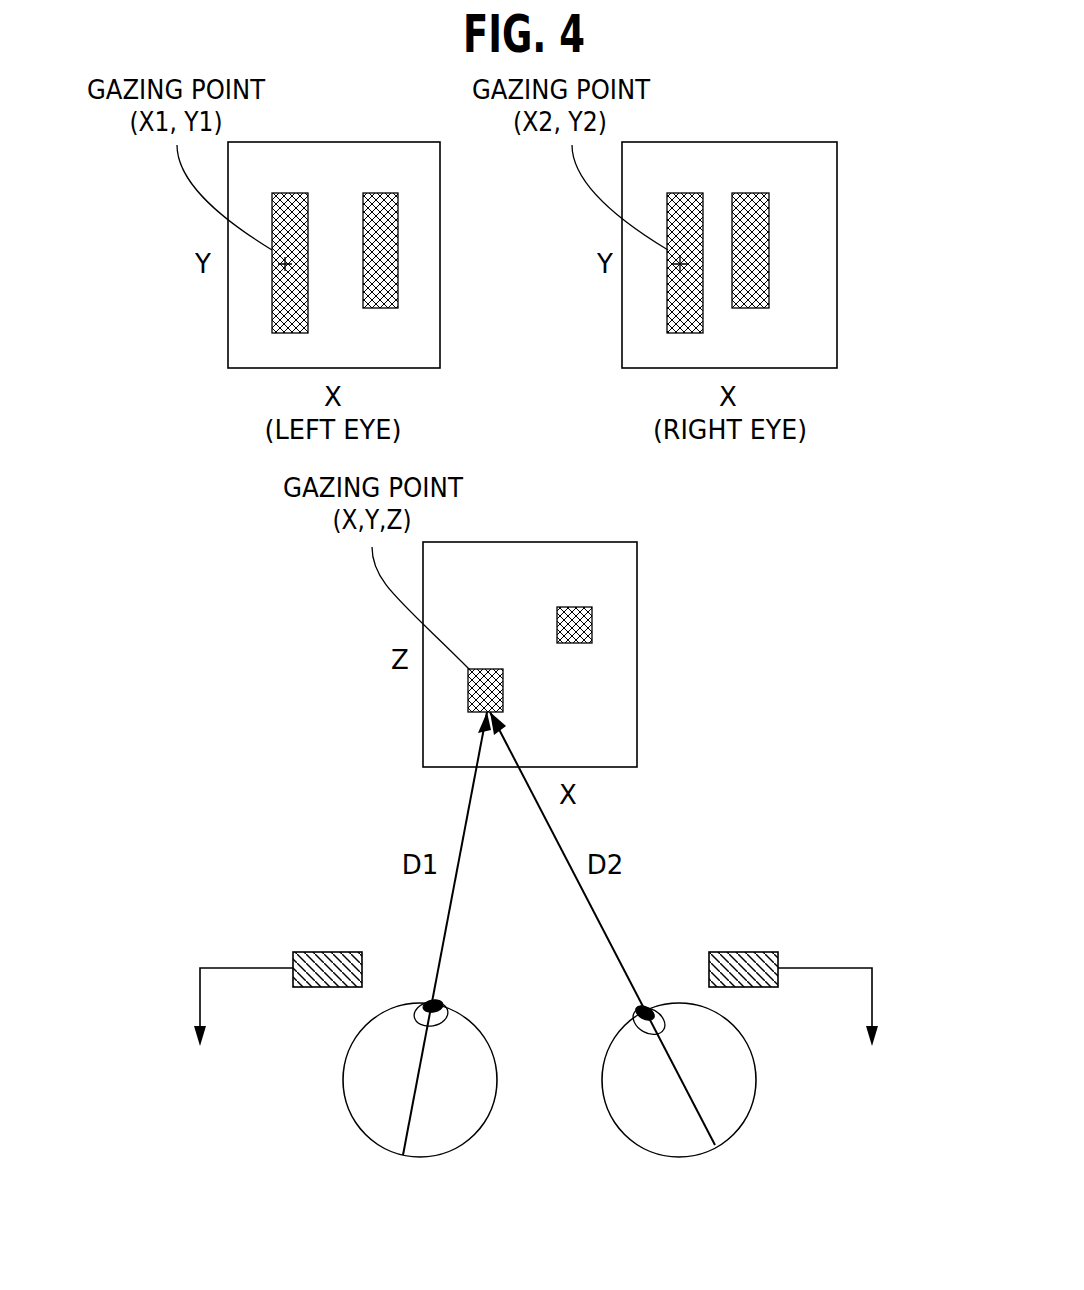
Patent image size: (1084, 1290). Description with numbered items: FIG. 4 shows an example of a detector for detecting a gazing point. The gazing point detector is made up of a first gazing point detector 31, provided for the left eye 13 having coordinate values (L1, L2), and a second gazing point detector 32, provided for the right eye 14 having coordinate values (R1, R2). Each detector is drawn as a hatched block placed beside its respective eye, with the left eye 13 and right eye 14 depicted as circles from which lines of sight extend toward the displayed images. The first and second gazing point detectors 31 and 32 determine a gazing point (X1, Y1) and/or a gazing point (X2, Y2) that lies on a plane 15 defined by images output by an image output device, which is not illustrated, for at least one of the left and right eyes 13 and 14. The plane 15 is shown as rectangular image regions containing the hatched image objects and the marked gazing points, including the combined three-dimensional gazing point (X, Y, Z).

The left eye 13 is at (343, 1087).
The right eye 14 is at (756, 1087).
The plane 15 is at (425, 333).
The first gazing point detector 31 is at (348, 952).
The second gazing point detector 32 is at (752, 952).